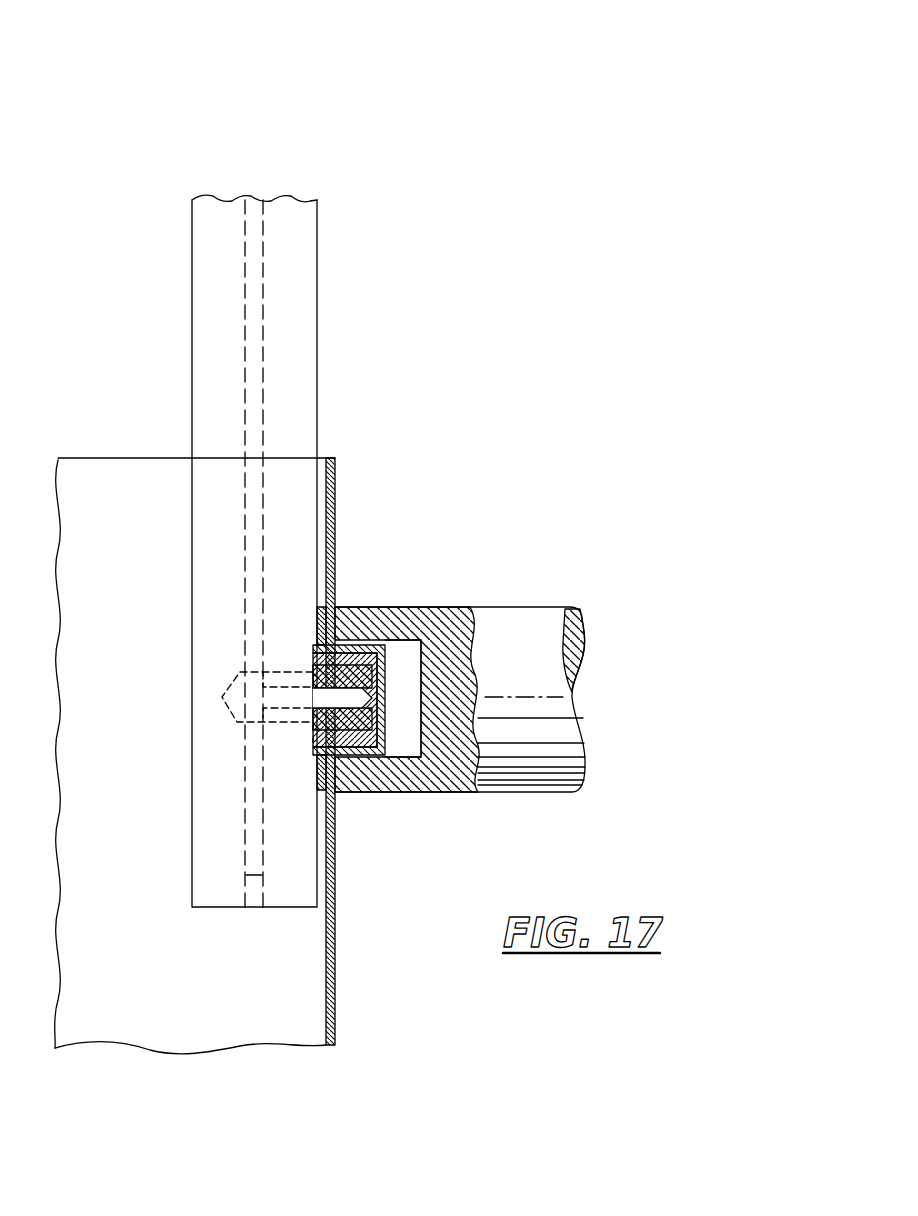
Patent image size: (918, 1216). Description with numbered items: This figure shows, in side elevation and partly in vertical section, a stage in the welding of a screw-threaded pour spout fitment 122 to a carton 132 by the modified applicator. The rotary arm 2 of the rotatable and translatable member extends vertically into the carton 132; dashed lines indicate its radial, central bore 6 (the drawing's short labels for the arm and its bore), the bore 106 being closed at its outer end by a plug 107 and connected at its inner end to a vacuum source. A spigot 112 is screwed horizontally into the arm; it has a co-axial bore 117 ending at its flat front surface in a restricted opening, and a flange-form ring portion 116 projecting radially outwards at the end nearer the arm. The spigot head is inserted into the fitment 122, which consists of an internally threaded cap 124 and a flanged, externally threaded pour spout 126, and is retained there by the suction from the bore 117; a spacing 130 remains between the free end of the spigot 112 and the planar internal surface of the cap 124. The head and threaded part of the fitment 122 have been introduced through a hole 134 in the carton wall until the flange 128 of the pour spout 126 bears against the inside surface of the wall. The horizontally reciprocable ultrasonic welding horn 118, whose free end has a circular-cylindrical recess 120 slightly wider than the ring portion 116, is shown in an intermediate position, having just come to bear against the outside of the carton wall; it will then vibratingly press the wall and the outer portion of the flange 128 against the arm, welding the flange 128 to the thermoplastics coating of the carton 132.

The panel 2 is at (303, 336).
The panel core / insert 6 is at (265, 438).
The radial central bore 106 is at (233, 723).
The plug 107 is at (240, 890).
The spigot 112 is at (313, 728).
The ring portion 116 is at (313, 742).
The bore 117 is at (313, 648).
The ultrasonic welding horn 118 is at (458, 780).
The recess 120 is at (403, 652).
The pour spout fitment 122 is at (380, 642).
The cap 124 is at (420, 657).
The pour spout 126 is at (365, 792).
The flange 128 is at (317, 622).
The spacing 130 is at (405, 706).
The carton 132 is at (332, 1003).
The hole 134 is at (330, 792).